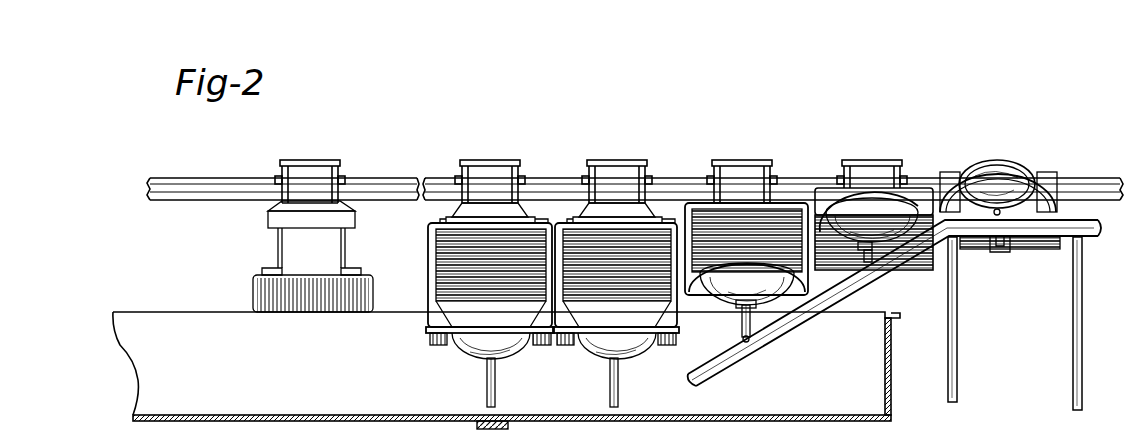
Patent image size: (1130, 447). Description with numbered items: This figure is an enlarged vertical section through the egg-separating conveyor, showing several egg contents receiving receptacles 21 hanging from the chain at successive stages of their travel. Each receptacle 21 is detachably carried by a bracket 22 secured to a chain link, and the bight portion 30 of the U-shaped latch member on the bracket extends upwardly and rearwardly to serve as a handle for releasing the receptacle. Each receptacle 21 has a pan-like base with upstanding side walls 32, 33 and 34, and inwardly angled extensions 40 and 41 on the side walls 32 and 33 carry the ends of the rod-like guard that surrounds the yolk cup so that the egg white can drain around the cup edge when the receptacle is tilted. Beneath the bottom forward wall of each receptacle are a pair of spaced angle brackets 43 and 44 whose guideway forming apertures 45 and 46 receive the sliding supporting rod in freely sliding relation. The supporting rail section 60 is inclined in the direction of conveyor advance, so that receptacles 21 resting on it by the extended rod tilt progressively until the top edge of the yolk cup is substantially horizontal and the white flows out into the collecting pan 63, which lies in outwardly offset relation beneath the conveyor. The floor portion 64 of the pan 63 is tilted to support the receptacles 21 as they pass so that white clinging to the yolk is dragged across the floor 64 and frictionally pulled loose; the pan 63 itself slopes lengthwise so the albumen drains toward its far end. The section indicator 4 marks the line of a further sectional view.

The section line 4 is at (536, 129).
The egg contents receiving receptacle 21 is at (258, 292).
The bracket 22 is at (622, 178).
The bight portion 30 is at (728, 163).
The side wall 32 is at (558, 296).
The side wall 33 is at (670, 298).
The side wall 34 is at (604, 232).
The inwardly angled extension 40 is at (436, 316).
The inwardly angled extension 41 is at (545, 320).
The angle bracket 43 is at (754, 304).
The angle bracket 44 is at (1010, 251).
The guideway forming aperture 45 is at (738, 317).
The guideway forming aperture 46 is at (990, 248).
The supporting rail section 60 is at (852, 284).
The collecting receptacle or pan 63 is at (688, 421).
The floor portion 64 is at (630, 412).